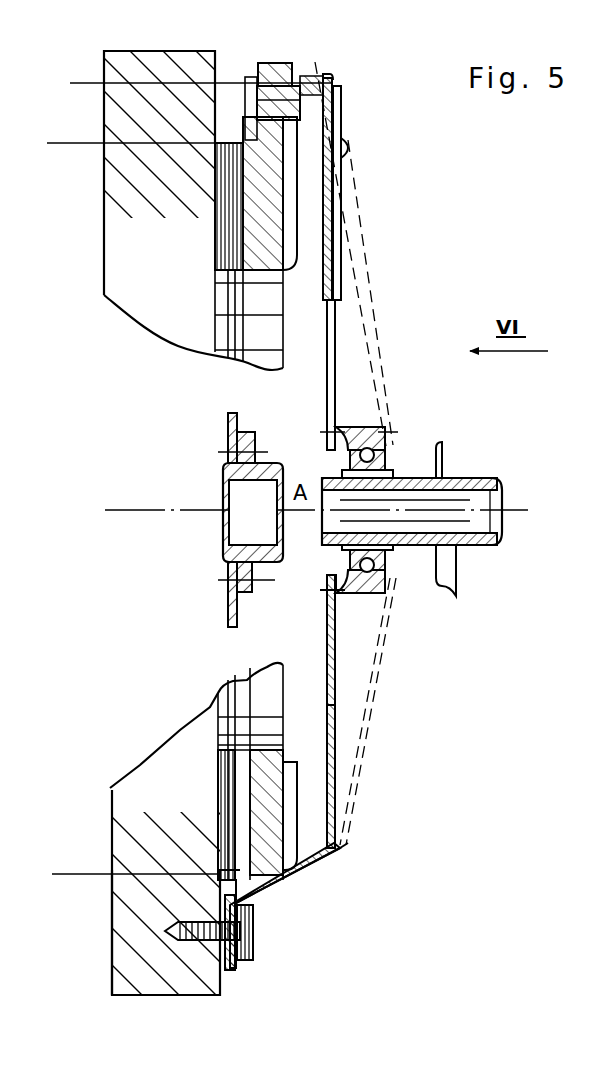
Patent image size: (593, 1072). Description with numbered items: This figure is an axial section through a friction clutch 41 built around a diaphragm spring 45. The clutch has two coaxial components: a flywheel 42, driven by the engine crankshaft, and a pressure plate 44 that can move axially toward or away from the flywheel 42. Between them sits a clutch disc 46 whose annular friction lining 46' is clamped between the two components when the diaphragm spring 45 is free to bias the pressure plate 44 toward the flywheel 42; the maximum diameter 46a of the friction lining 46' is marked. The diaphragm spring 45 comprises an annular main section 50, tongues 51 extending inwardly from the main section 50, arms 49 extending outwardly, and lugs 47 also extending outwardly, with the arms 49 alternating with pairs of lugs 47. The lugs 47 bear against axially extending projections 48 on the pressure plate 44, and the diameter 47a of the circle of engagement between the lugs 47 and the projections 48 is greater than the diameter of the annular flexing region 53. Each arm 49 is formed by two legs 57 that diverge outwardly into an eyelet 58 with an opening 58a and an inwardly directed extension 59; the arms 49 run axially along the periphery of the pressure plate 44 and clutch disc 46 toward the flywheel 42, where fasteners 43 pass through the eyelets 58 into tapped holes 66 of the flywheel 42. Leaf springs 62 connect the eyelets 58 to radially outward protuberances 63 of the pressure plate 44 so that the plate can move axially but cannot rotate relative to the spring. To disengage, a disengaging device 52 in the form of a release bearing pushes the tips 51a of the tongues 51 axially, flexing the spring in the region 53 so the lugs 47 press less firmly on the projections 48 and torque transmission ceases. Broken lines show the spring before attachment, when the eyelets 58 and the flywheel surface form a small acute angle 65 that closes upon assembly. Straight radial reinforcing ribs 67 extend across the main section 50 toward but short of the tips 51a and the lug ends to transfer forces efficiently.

The friction clutch 41 is at (338, 78).
The flywheel 42 is at (165, 997).
The fasteners 43 is at (255, 935).
The pressure plate 44 is at (262, 782).
The diaphragm spring 45 is at (340, 288).
The clutch disc 46 is at (265, 185).
The annular friction lining 46' is at (256, 230).
The maximum diameter of the friction lining 46a is at (60, 138).
The lugs 47 is at (334, 82).
The diameter of the lug engagement circle 47a is at (82, 78).
The projections 48 is at (305, 80).
The arms 49 is at (300, 876).
The annular main section 50 is at (334, 748).
The tongues 51 is at (334, 660).
The tips of the tongues 51a is at (331, 576).
The disengaging device 52 is at (442, 575).
The flexing region 53 is at (355, 150).
The legs 57 is at (288, 875).
The eyelet 58 is at (226, 840).
The opening of the eyelet 58a is at (220, 868).
The extension 59 is at (215, 913).
The leaf springs 62 is at (215, 965).
The protuberances 63 is at (281, 70).
The acute angle 65 is at (216, 766).
The tapped holes 66 is at (183, 932).
The reinforcing ribs 67 is at (337, 250).